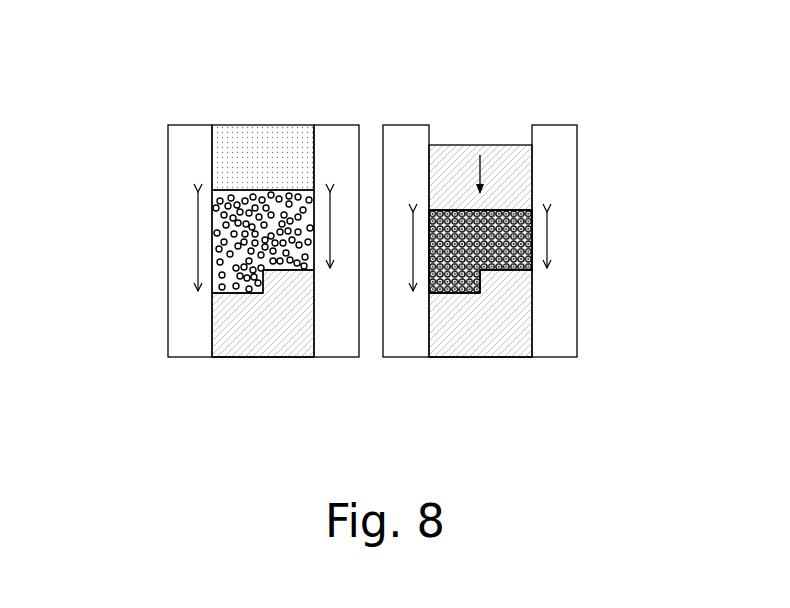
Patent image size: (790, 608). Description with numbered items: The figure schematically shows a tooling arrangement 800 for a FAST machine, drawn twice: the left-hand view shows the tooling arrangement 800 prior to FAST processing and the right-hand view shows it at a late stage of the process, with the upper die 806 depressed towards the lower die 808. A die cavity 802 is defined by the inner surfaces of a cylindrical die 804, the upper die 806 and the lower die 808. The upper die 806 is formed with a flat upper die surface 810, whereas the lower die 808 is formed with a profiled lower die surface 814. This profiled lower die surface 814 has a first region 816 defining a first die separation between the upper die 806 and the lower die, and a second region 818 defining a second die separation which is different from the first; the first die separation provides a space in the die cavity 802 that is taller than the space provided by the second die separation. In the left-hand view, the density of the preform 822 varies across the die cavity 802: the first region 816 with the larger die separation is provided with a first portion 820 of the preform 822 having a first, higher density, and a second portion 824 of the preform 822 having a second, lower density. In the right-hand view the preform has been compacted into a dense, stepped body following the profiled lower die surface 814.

The tooling arrangement 800 is at (137, 95).
The die cavity 802 is at (262, 218).
The cylindrical die 804 is at (183, 337).
The upper die 806 is at (268, 143).
The lower die 808 is at (288, 342).
The flat upper die surface 810 is at (228, 200).
The profiled lower die surface 814 is at (264, 280).
The first region 816 is at (218, 298).
The second region 818 is at (293, 272).
The first portion 820 is at (217, 193).
The preform 822 is at (218, 287).
The second portion 824 is at (293, 198).